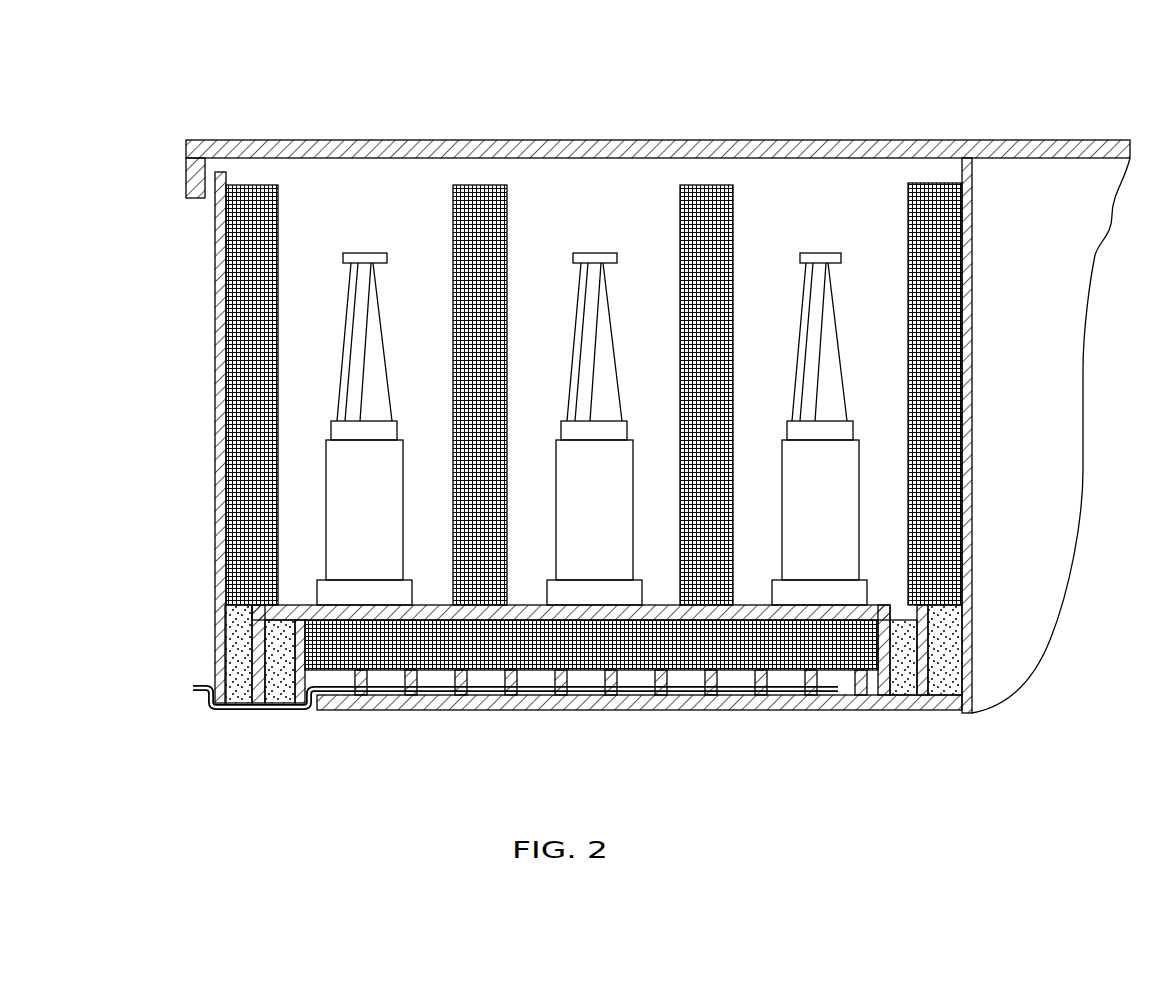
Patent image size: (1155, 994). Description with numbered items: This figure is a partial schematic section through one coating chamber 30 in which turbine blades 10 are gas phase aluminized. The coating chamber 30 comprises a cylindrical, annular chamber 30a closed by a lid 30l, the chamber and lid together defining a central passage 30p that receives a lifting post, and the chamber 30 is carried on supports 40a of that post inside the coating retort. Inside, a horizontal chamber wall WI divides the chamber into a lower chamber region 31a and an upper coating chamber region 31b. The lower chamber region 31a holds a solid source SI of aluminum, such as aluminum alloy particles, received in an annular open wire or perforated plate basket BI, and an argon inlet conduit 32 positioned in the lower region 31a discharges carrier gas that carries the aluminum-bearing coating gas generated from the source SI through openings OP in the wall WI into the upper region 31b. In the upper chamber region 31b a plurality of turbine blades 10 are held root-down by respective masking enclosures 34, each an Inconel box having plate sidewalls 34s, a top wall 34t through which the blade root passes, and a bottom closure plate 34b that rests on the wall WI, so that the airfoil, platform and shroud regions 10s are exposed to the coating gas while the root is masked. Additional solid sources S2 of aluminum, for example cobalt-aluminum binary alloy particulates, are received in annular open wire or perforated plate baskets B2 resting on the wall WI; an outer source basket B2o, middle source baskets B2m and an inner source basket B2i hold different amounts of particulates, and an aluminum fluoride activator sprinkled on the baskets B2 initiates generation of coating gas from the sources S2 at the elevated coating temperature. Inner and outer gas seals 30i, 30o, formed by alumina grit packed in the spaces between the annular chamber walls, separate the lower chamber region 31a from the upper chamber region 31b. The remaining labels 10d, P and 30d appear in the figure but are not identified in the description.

The turbine blade 10 is at (680, 328).
The shroud region 10s is at (828, 253).
The lead wire 10d is at (832, 318).
The phosphor plate P is at (388, 255).
The coating chamber 30 is at (621, 429).
The central passage 30p is at (1018, 180).
The lid 30l is at (186, 150).
The cylindrical annular chamber 30a is at (298, 226).
The aperture 30d is at (320, 280).
The outer gas seal 30o is at (212, 665).
The inner gas seal 30i is at (215, 673).
The lower chamber region 31a is at (878, 616).
The upper coating chamber region 31b is at (316, 238).
The argon inlet conduit 32 is at (233, 706).
The masking enclosure 34 is at (680, 499).
The top wall 34t is at (857, 433).
The sidewall 34s is at (860, 497).
The bottom closure plate 34b is at (645, 580).
The support 40a is at (660, 700).
The basket B2 is at (579, 388).
The outer source basket B2o is at (242, 475).
The middle source basket B2m is at (505, 243).
The inner source basket B2i is at (965, 283).
The solid source of aluminum S2 is at (232, 450).
The opening OP is at (310, 605).
The horizontal chamber wall WI is at (432, 605).
The solid source of aluminum SI is at (447, 672).
The basket BI is at (855, 645).